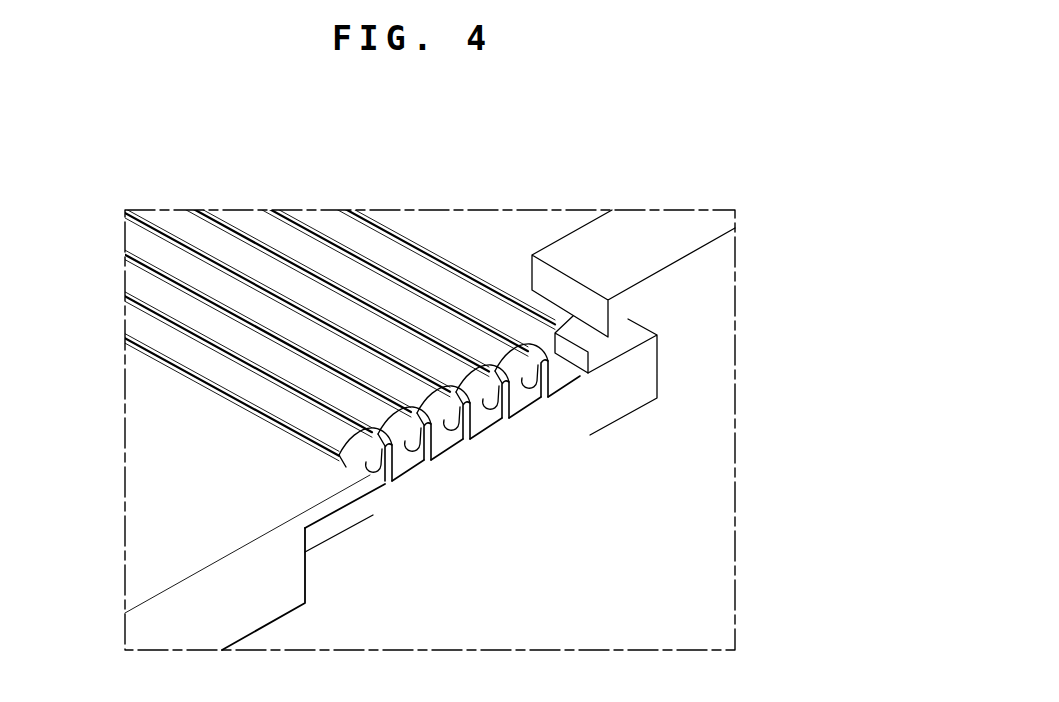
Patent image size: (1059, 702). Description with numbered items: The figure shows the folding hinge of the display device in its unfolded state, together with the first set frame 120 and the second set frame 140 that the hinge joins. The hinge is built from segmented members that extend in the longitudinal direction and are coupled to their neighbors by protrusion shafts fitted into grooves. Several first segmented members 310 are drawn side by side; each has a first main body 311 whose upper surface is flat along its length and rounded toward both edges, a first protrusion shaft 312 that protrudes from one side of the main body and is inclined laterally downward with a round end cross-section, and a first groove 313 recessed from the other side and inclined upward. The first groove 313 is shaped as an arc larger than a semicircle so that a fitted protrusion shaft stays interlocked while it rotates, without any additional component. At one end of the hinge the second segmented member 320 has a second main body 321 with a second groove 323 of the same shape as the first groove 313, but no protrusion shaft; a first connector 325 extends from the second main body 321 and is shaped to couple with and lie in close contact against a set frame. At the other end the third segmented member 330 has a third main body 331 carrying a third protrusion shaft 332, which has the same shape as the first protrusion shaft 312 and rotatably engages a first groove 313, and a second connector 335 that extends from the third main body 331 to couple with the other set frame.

The first set frame 120 is at (512, 222).
The second set frame 140 is at (150, 449).
The first segmented member 310 is at (210, 320).
The first main body 311 is at (441, 415).
The first protrusion shaft 312 is at (412, 443).
The first groove 313 is at (468, 418).
The second segmented member 320 is at (200, 350).
The second main body 321 is at (350, 498).
The second groove 323 is at (389, 497).
The first connector 325 is at (320, 542).
The third segmented member 330 is at (413, 262).
The third main body 331 is at (557, 354).
The third protrusion shaft 332 is at (536, 402).
The second connector 335 is at (590, 385).